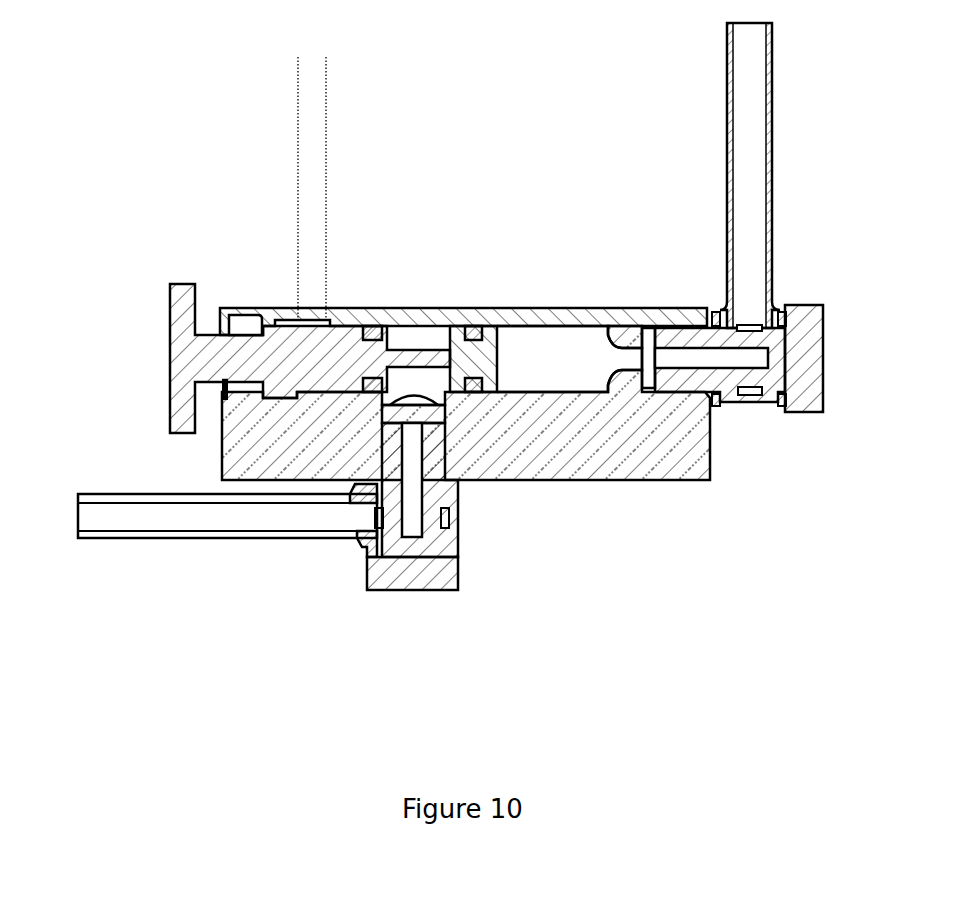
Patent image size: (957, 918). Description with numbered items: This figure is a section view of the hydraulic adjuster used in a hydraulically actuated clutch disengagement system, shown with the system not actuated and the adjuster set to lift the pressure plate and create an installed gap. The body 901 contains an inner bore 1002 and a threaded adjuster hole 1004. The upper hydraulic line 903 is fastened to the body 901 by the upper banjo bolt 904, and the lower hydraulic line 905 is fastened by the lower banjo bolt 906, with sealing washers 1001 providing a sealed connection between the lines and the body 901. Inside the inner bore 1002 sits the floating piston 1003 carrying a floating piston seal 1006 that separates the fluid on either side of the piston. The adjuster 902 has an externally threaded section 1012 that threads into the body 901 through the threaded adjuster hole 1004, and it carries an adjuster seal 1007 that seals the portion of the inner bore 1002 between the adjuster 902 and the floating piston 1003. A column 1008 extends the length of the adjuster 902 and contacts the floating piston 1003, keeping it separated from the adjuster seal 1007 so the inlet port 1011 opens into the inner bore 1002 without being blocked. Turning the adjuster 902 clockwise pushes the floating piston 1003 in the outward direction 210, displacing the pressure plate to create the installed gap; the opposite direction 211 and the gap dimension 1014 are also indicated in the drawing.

The body 901 is at (653, 470).
The adjuster 902 is at (185, 365).
The upper hydraulic line 903 is at (147, 535).
The upper banjo bolt 904 is at (412, 571).
The lower hydraulic line 905 is at (768, 123).
The lower banjo bolt 906 is at (798, 375).
The sealing washers 1001 is at (722, 412).
The inner bore 1002 is at (543, 367).
The floating piston 1003 is at (487, 360).
The threaded adjuster hole 1004 is at (242, 325).
The floating piston seal 1006 is at (481, 312).
The adjuster seal 1007 is at (370, 312).
The column 1008 is at (422, 358).
The inlet port 1011 is at (436, 399).
The externally threaded section 1012 is at (278, 358).
The gap dimension 1014 is at (257, 77).
The outward direction 210 is at (600, 656).
The direction 211 is at (215, 656).